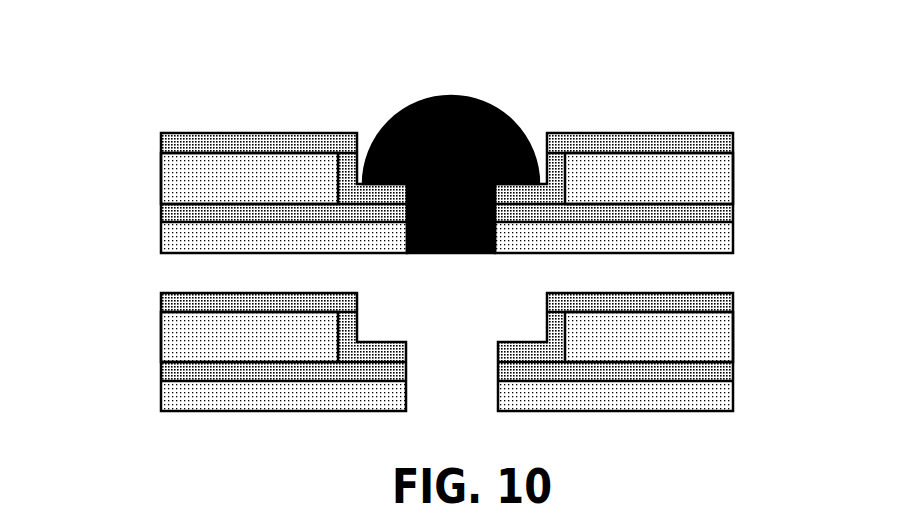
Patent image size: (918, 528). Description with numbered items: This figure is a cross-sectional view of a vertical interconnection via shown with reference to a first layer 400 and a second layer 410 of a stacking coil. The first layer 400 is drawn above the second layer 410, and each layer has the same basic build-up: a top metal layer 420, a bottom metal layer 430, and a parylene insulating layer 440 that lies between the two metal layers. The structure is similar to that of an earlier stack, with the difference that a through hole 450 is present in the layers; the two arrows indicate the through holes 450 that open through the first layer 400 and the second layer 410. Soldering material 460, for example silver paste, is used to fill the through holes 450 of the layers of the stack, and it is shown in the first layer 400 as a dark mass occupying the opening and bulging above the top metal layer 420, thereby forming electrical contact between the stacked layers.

The first layer 400 is at (440, 147).
The second layer 410 is at (485, 351).
The top metal layer 420 is at (282, 143).
The bottom metal layer 430 is at (197, 212).
The parylene insulating layer 440 is at (207, 177).
The through hole 450 is at (430, 264).
The soldering material 460 is at (482, 105).